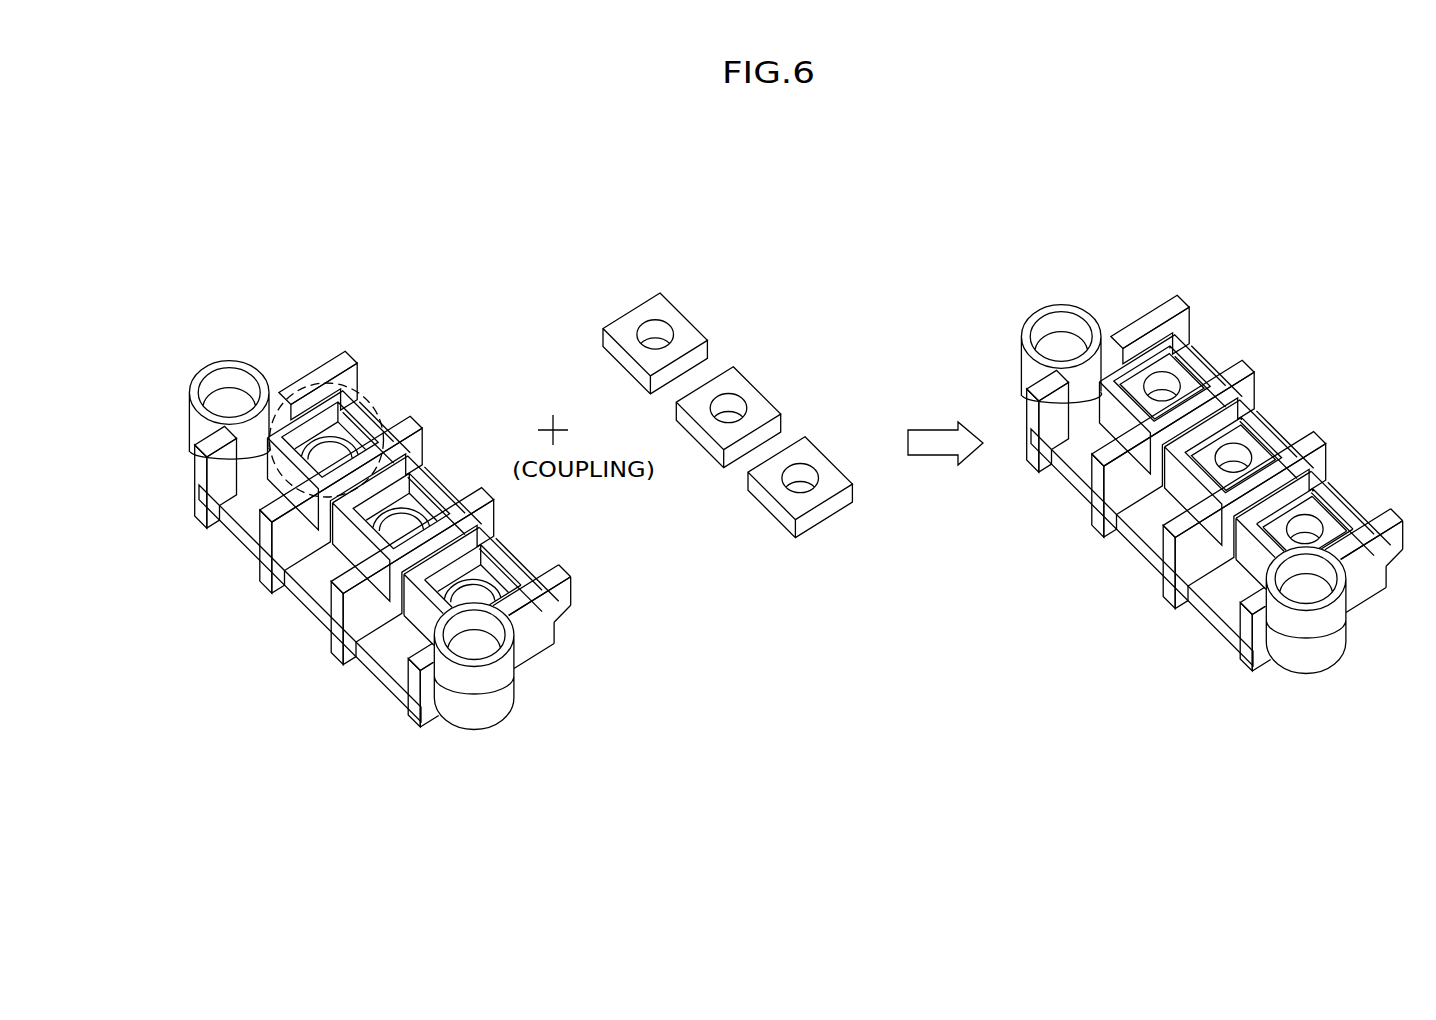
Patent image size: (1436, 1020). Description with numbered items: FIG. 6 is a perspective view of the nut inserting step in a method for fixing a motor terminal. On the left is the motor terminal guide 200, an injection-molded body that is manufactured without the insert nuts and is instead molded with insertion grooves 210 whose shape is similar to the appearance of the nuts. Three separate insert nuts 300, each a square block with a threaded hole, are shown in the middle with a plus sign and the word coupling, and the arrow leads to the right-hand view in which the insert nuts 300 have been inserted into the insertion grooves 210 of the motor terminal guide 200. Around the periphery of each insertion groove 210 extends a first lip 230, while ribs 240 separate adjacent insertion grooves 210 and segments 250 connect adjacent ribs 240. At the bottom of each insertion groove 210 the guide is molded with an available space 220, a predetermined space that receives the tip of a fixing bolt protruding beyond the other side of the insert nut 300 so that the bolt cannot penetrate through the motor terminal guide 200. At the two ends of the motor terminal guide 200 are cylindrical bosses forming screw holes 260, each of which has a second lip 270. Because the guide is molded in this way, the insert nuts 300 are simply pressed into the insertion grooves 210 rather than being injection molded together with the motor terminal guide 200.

The motor terminal guide 200 is at (395, 637).
The insertion groove 210 is at (330, 387).
The available space 220 is at (400, 530).
The first lip 230 is at (1263, 537).
The rib 240 is at (1377, 510).
The segment 250 is at (500, 552).
The screw hole 260 is at (475, 653).
The second lip 270 is at (517, 657).
The insert nut 300 is at (830, 463).